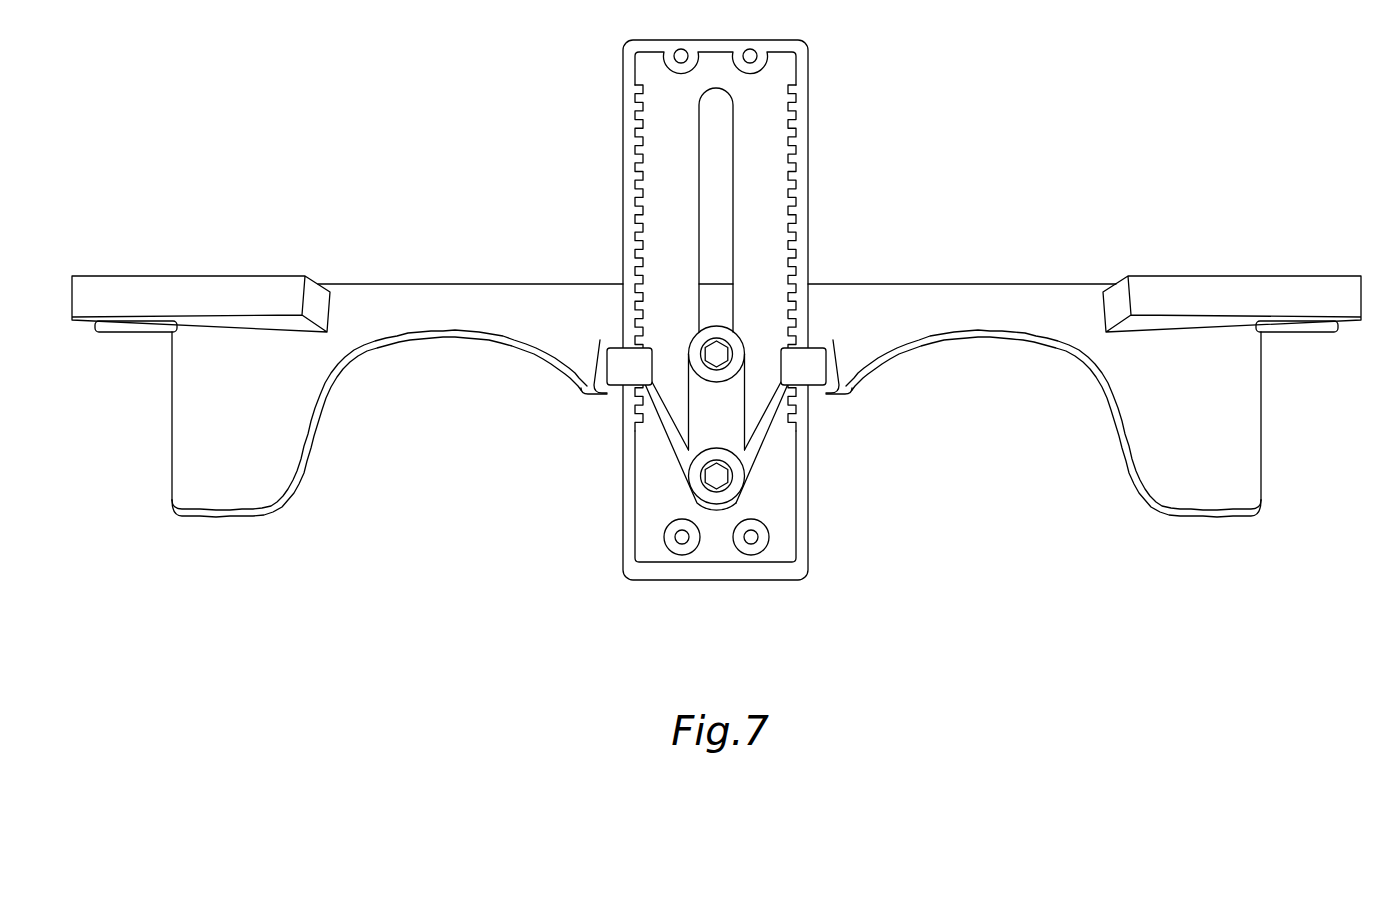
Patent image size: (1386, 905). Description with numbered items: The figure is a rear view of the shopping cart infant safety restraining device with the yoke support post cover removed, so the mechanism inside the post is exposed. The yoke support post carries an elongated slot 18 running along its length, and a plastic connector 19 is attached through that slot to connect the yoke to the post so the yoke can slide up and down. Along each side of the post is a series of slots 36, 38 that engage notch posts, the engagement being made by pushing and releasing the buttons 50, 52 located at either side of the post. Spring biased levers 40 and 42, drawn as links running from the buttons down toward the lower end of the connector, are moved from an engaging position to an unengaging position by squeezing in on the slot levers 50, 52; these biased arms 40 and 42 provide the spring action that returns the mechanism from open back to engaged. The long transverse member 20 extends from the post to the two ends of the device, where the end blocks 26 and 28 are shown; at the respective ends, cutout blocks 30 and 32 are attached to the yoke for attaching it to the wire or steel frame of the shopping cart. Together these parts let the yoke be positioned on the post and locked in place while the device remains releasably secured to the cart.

The elongated slot 18 is at (717, 153).
The plastic connector 19 is at (724, 413).
The cross bar 20 is at (975, 292).
The right end block 26 is at (1212, 292).
The left end block 28 is at (218, 292).
The cutout block 30 is at (1313, 326).
The cutout block 32 is at (118, 326).
The slots 36 is at (640, 208).
The slots 38 is at (795, 208).
The spring biased lever 40 is at (665, 437).
The spring biased lever 42 is at (768, 437).
The button 50 is at (604, 348).
The button 52 is at (831, 348).